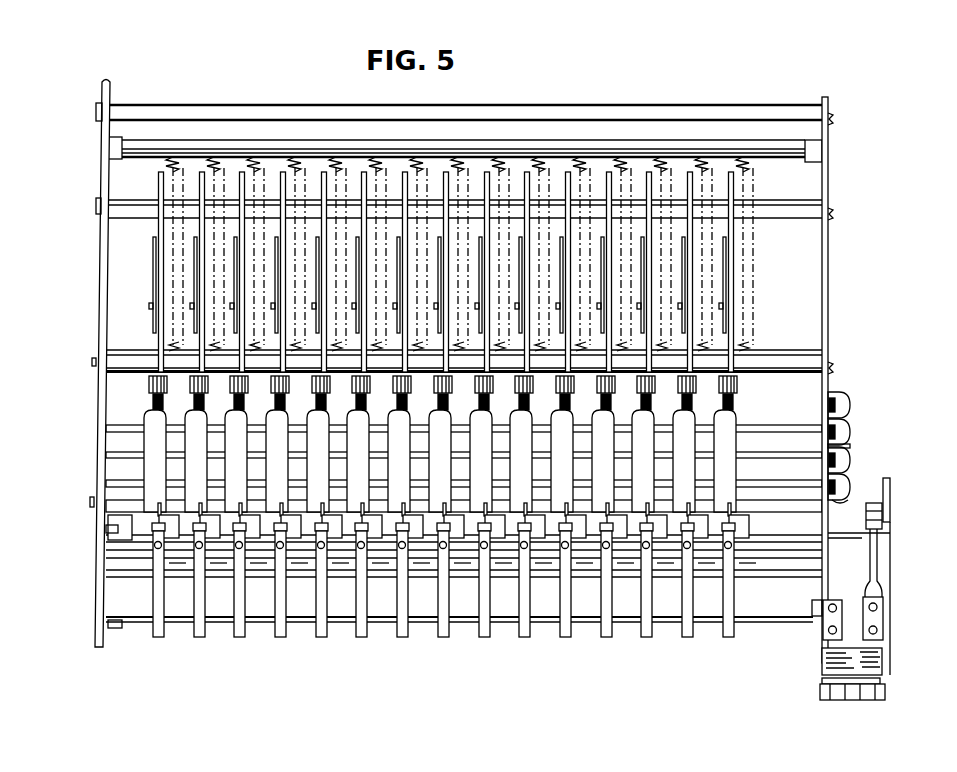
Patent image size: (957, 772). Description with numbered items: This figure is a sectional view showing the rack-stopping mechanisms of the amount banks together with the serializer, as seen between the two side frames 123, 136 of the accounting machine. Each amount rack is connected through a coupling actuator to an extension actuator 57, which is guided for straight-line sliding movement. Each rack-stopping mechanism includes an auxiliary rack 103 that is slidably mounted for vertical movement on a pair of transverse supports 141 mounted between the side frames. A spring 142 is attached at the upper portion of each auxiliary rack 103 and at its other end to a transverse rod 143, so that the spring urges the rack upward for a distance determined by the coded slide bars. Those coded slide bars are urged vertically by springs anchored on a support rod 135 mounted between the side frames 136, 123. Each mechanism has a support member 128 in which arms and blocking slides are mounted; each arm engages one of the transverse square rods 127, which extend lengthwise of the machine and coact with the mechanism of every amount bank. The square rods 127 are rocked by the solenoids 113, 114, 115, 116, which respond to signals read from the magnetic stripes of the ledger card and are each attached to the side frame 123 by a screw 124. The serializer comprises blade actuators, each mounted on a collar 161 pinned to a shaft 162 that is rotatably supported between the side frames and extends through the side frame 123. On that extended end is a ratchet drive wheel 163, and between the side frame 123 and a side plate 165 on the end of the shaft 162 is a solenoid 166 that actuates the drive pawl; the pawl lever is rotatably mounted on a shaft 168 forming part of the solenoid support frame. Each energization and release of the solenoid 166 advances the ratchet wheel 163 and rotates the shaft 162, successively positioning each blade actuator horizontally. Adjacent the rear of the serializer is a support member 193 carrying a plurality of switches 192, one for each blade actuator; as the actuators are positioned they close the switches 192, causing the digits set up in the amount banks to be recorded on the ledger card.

The extension actuator 57 is at (726, 252).
The auxiliary rack 103 is at (734, 186).
The solenoid 113 is at (846, 394).
The solenoid 114 is at (850, 428).
The solenoid 115 is at (850, 462).
The solenoid 116 is at (849, 485).
The side frame 123 is at (828, 250).
The screw 124 is at (850, 446).
The transverse square rod 127 is at (771, 426).
The support member 128 is at (148, 441).
The support rod 135 is at (786, 373).
The side frame 136 is at (96, 395).
The transverse supports 141 is at (791, 202).
The spring 142 is at (745, 288).
The transverse rod 143 is at (680, 143).
The collar 161 is at (158, 520).
The shaft 162 is at (125, 522).
The ratchet drive wheel 163 is at (891, 498).
The side plate 165 is at (891, 570).
The solenoid 166 is at (881, 655).
The shaft 168 is at (885, 692).
The switches 192 is at (152, 637).
The support member 193 is at (768, 618).